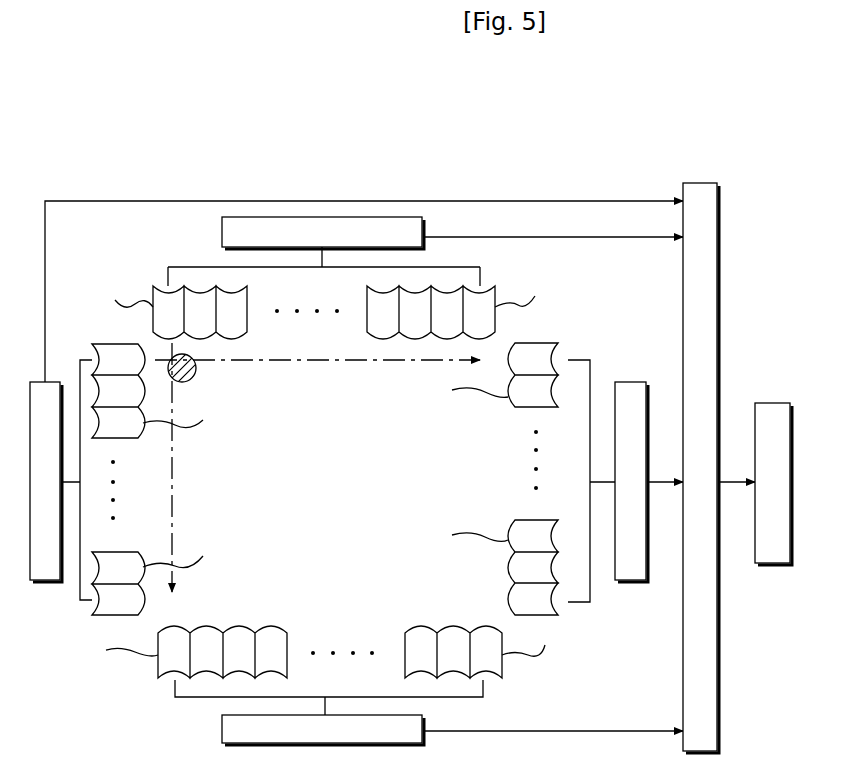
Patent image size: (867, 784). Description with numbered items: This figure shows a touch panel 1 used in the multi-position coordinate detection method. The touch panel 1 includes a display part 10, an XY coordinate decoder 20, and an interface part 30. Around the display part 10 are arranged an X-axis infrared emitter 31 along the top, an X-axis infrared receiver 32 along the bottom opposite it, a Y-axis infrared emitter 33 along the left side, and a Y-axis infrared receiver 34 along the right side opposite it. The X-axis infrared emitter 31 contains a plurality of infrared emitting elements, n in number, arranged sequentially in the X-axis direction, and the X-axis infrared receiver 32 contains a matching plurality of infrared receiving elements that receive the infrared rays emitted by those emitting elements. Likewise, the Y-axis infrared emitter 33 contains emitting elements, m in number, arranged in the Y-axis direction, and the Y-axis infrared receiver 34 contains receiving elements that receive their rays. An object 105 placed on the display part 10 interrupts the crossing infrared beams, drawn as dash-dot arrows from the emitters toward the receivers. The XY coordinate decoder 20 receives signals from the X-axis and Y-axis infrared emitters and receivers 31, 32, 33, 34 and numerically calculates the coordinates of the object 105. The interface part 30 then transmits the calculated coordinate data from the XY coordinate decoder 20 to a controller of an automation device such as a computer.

The touch panel 1 is at (633, 104).
The display part 10 is at (516, 268).
The XY coordinate decoder 20 is at (720, 205).
The interface part 30 is at (786, 394).
The X-axis infrared emitter 31 is at (222, 230).
The X-axis infrared receiver 32 is at (222, 729).
The Y-axis infrared emitter 33 is at (45, 583).
The Y-axis infrared receiver 34 is at (630, 382).
The object 105 is at (197, 370).